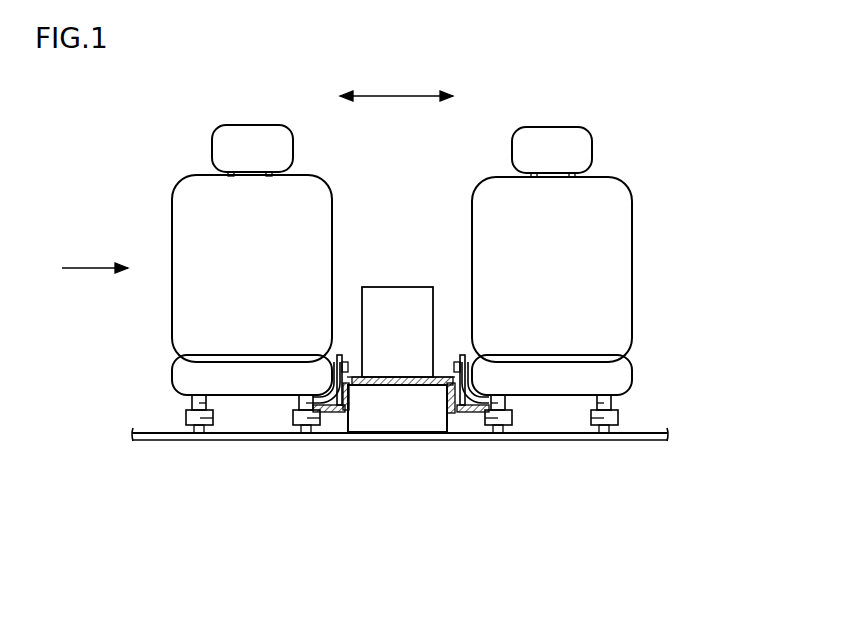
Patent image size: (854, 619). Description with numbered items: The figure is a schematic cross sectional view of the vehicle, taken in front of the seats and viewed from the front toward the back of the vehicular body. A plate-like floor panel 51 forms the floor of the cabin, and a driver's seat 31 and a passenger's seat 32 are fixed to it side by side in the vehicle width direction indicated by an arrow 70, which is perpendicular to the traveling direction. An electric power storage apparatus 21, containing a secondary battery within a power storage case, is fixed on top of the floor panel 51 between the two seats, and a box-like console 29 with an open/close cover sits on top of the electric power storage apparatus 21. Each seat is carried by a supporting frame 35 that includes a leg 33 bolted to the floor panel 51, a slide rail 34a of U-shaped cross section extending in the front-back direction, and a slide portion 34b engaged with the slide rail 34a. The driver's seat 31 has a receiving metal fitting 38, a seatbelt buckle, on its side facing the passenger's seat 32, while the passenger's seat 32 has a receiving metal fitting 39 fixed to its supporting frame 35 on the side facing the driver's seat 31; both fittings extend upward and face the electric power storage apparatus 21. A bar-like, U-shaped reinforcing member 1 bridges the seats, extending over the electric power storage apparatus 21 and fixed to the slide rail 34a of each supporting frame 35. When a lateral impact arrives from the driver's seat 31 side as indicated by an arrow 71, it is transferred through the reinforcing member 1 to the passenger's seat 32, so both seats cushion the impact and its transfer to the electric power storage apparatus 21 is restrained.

The reinforcing member 1 is at (468, 405).
The electric power storage apparatus 21 is at (400, 415).
The console 29 is at (397, 302).
The driver's seat 31 is at (172, 238).
The passenger's seat 32 is at (633, 240).
The leg 33 is at (200, 428).
The slide rail 34a is at (186, 418).
The slide portion 34b is at (188, 403).
The supporting frame 35 is at (226, 486).
The receiving metal fitting 38 is at (344, 355).
The receiving metal fitting 39 is at (456, 355).
The floor panel 51 is at (366, 438).
The arrow 70 is at (398, 93).
The arrow 71 is at (87, 272).